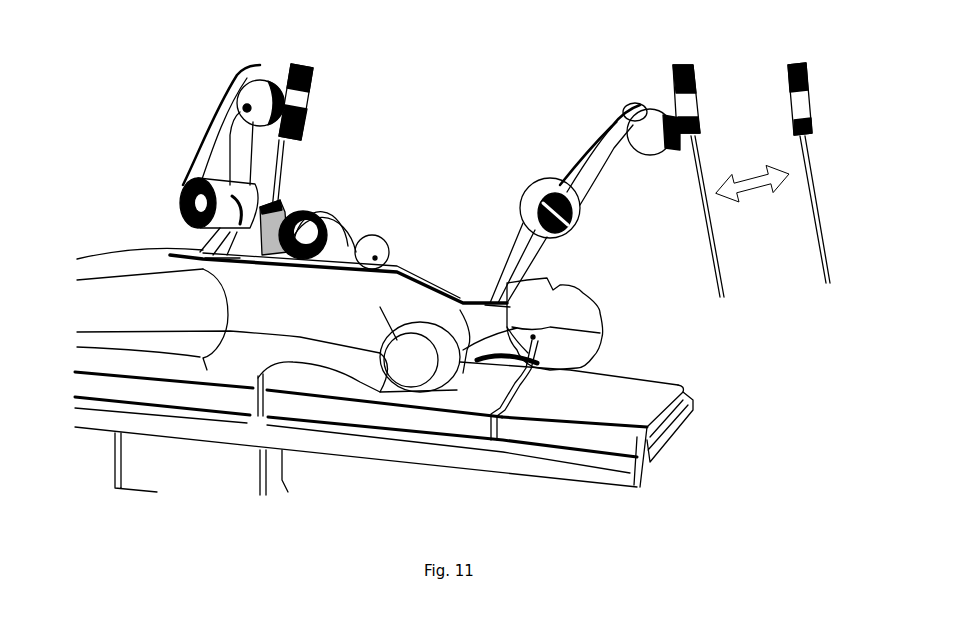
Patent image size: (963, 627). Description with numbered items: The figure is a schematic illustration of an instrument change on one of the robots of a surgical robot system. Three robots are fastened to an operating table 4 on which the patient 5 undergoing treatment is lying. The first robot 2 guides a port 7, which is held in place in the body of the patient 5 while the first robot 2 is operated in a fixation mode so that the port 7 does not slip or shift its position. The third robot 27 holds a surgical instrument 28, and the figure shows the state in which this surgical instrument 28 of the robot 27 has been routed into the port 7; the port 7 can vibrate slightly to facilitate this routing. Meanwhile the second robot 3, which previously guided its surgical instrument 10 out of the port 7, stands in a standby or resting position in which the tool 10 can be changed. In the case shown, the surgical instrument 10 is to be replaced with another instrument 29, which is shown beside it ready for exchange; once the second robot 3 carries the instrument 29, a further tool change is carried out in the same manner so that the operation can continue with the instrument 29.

The first robot 2 is at (383, 212).
The second robot 3 is at (552, 150).
The operating table 4 is at (253, 434).
The patient 5 is at (322, 318).
The port 7 is at (303, 208).
The surgical instrument 10 is at (702, 228).
The third robot 27 is at (187, 121).
The surgical instrument 28 is at (292, 158).
The instrument 29 is at (787, 96).